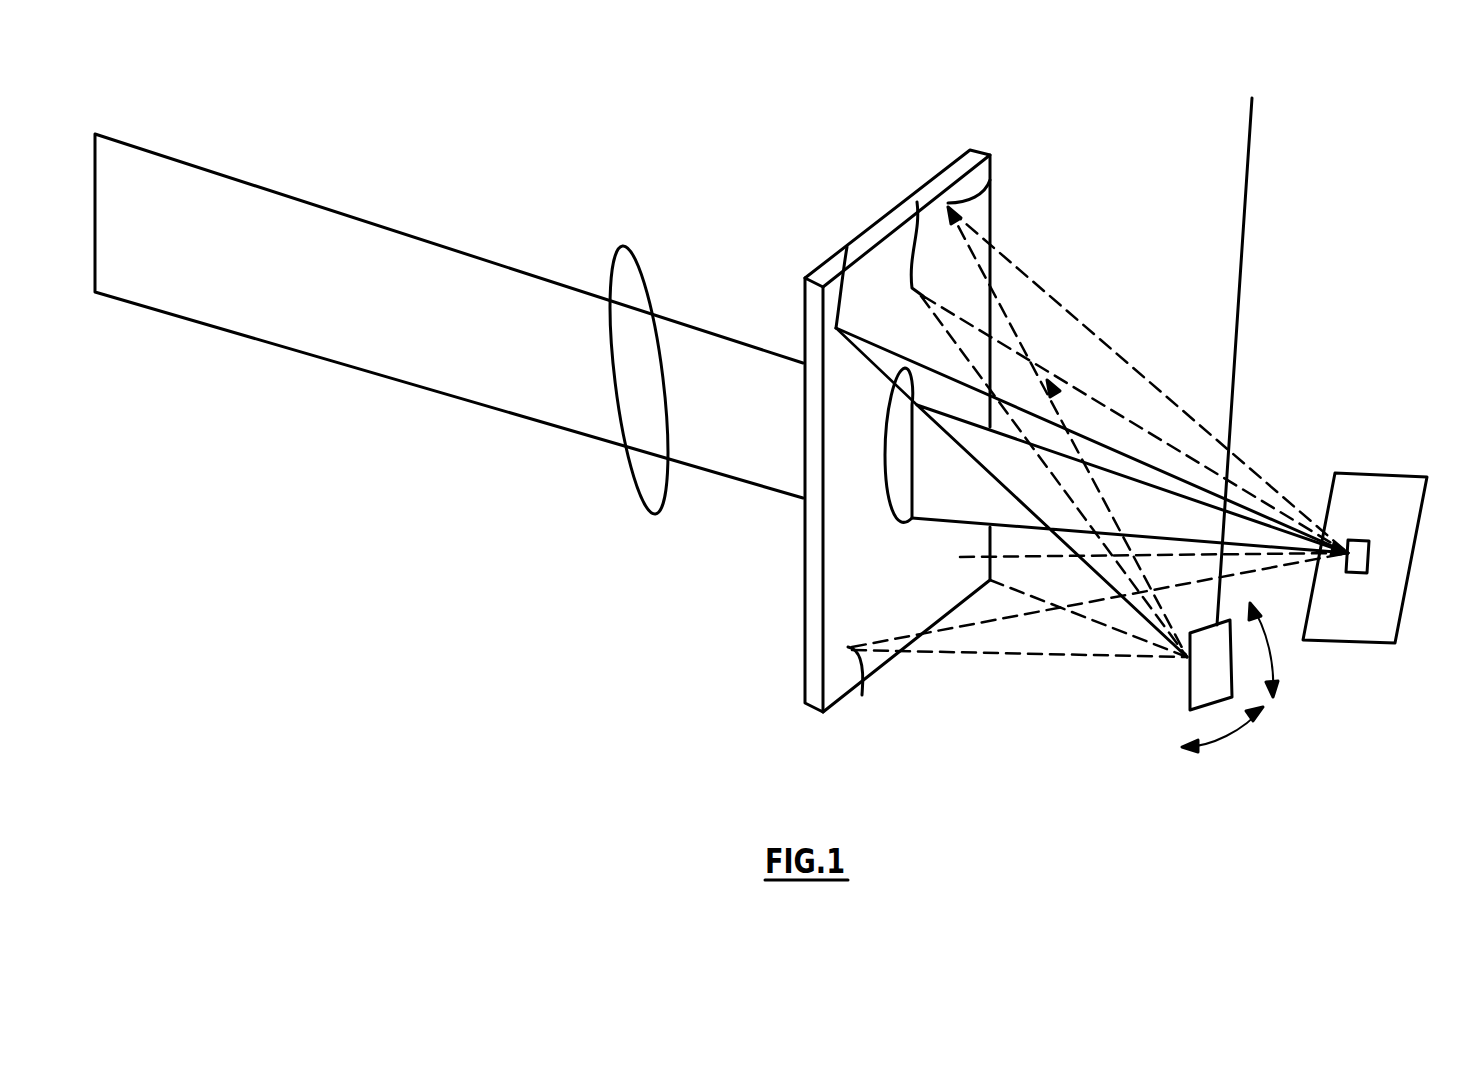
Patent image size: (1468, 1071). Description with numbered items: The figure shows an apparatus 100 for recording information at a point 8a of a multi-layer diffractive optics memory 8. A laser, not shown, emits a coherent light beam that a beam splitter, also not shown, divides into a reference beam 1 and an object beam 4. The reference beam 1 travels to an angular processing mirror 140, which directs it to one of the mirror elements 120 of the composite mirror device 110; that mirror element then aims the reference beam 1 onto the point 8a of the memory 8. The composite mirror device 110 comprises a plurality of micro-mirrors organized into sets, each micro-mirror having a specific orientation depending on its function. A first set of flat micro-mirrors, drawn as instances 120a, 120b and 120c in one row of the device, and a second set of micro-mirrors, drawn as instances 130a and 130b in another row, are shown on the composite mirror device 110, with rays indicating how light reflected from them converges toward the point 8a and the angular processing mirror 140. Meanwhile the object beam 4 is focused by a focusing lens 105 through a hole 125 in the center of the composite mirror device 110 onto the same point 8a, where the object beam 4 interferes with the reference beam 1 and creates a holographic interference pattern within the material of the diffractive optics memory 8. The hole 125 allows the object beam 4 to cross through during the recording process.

The reference beam 1 is at (1253, 122).
The object beam 4 is at (285, 190).
The multi-layer diffractive optics memory 8 is at (1410, 493).
The point 8a is at (1370, 548).
The apparatus 100 is at (540, 722).
The focusing lens 105 is at (648, 272).
The composite mirror device 110 is at (800, 650).
The mirror element 120 is at (834, 553).
The flat micro-mirror 120a is at (847, 250).
The flat micro-mirror 120b is at (917, 206).
The flat micro-mirror 120c is at (990, 183).
The hole 125 is at (886, 455).
The micro-mirror 130a is at (862, 695).
The micro-mirror 130b is at (962, 558).
The angular processing mirror 140 is at (1188, 675).